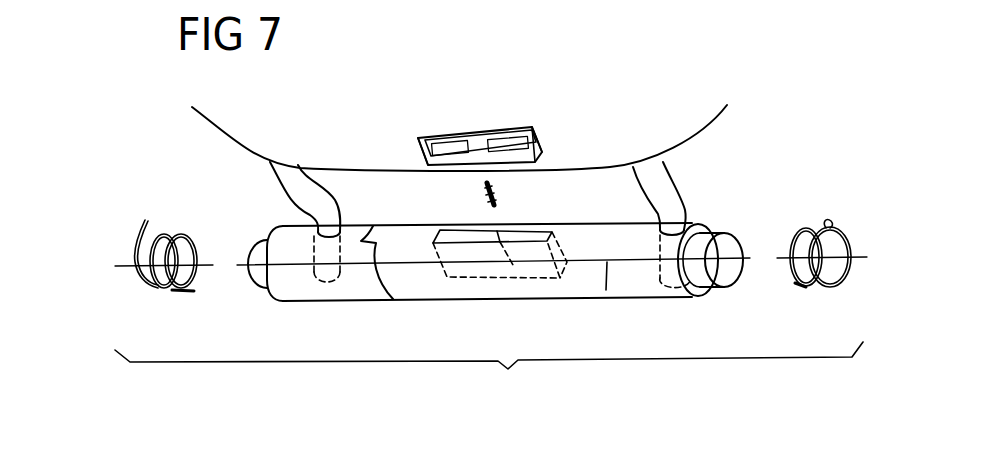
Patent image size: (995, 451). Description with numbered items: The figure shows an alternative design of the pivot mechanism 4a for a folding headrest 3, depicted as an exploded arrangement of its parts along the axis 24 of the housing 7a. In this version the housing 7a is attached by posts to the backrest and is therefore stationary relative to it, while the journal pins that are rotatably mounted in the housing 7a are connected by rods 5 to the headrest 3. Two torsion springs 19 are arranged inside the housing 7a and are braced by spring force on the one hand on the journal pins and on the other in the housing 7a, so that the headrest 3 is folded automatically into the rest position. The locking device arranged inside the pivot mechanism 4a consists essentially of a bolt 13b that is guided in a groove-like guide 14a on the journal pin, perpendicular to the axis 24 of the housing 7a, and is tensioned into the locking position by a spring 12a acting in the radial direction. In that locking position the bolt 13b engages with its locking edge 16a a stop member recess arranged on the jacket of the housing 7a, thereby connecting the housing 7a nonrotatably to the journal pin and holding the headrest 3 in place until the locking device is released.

The headrest 3 is at (284, 100).
The rods 5 is at (292, 193).
The housing 7a is at (432, 308).
The groove-like guide 14a is at (543, 272).
The pivot mechanism 4a is at (710, 216).
The axis 24 is at (606, 290).
The torsion springs 19 is at (156, 218).
The locking edge 16a is at (455, 133).
The bolt 13b is at (523, 123).
The spring 12a is at (497, 186).